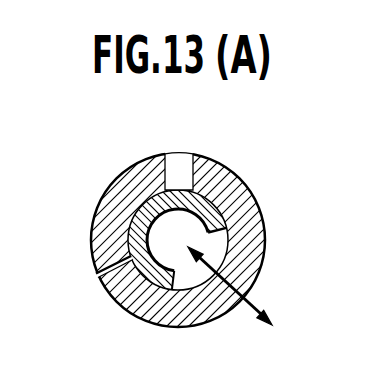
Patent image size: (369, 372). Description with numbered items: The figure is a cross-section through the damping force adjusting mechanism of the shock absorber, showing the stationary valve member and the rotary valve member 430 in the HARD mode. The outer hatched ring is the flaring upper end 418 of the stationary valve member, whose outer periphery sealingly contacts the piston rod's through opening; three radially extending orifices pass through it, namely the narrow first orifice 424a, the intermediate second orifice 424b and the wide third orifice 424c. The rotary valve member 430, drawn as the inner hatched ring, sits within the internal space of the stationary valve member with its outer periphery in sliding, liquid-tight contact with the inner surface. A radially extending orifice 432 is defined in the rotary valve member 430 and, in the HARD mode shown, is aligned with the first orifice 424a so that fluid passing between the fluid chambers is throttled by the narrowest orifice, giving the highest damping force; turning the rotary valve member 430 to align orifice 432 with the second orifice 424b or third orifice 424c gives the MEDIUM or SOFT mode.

The flaring upper end 418 is at (184, 240).
The rotary valve member 430 is at (130, 228).
The radially extending orifice 432 is at (217, 245).
The first orifice 424a is at (244, 292).
The second orifice 424b is at (110, 275).
The third orifice 424c is at (212, 156).